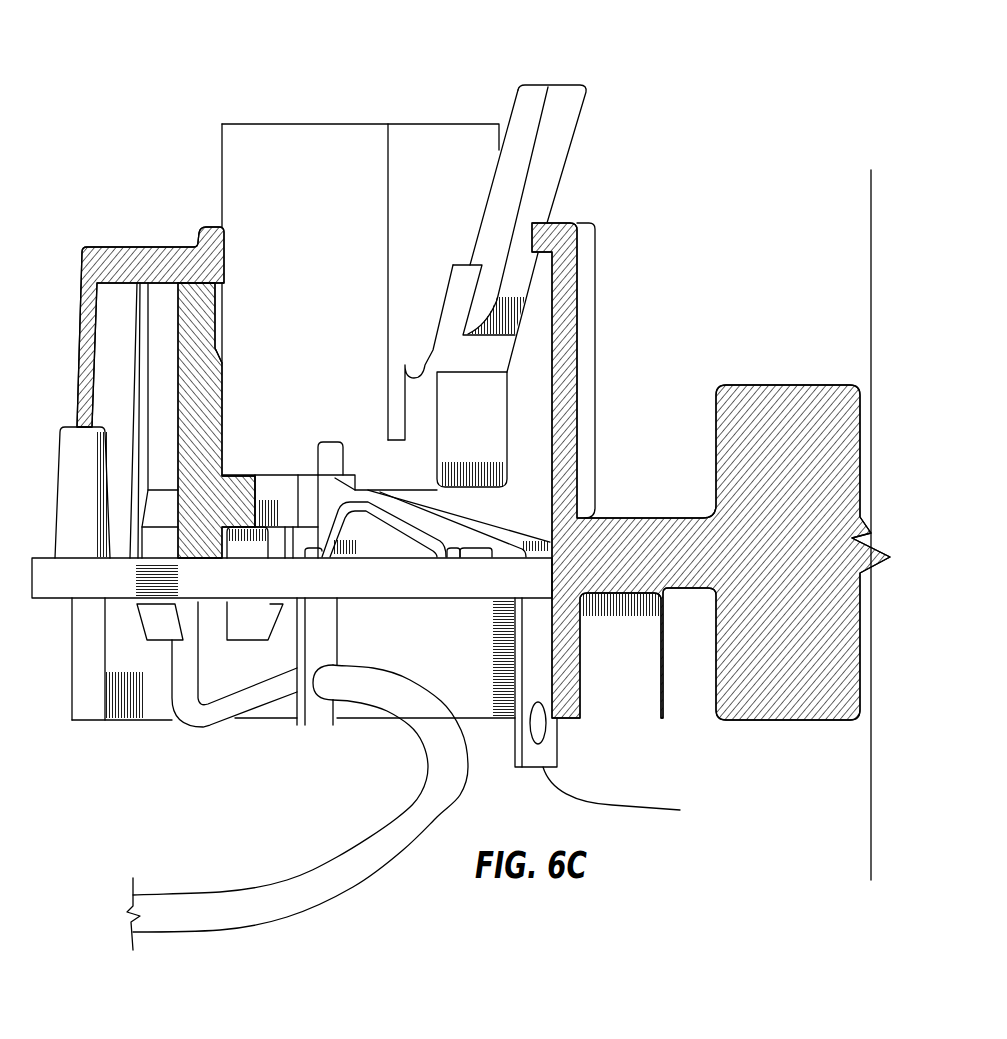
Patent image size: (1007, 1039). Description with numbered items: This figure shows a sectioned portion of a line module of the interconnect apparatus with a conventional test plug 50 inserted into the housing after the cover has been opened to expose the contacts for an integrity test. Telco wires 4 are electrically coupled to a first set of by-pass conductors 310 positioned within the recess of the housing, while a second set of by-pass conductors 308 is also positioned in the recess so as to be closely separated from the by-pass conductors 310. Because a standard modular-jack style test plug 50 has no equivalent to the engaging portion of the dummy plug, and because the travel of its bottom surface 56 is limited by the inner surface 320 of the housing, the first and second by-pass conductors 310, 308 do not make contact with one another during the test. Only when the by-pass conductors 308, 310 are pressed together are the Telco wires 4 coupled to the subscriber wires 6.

The test plug 50 is at (448, 90).
The bottom surface 56 is at (417, 468).
The second set of by-pass conductors 308 is at (480, 520).
The first set of by-pass conductors 310 is at (395, 515).
The inner surface 320 is at (277, 478).
The subscriber wires 6 is at (603, 800).
The Telco wires 4 is at (190, 907).